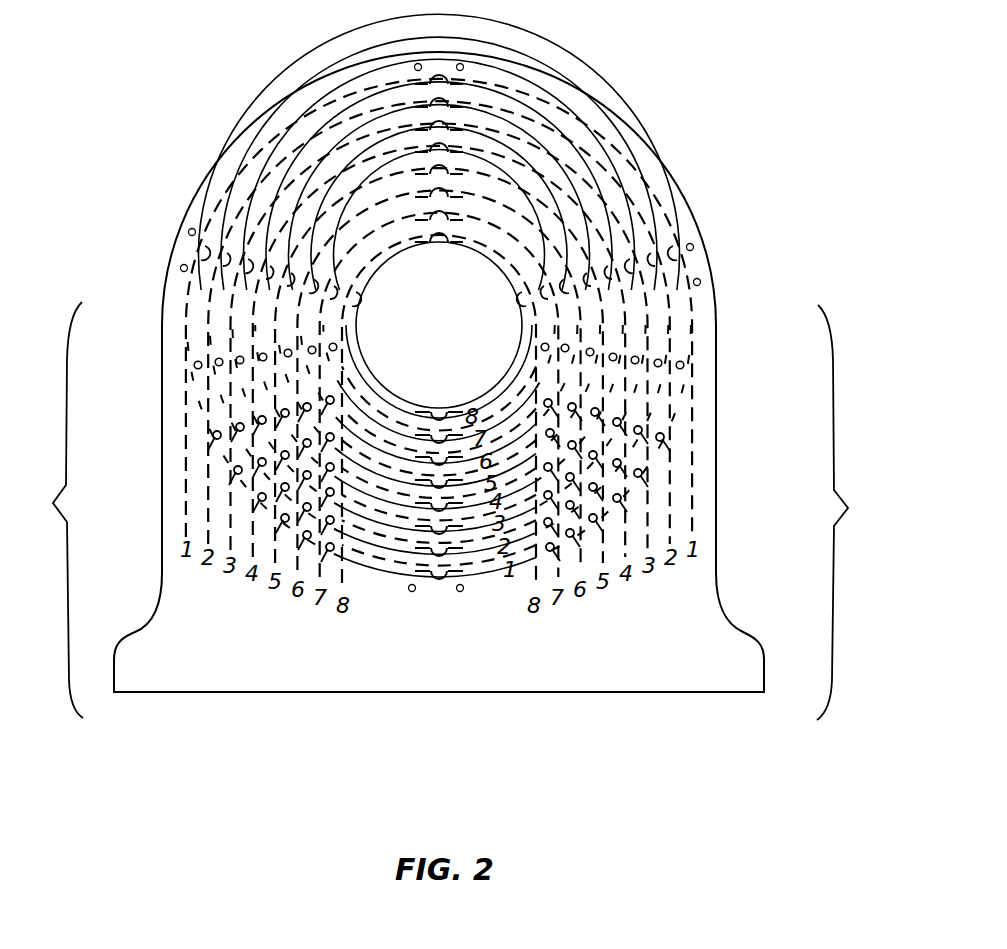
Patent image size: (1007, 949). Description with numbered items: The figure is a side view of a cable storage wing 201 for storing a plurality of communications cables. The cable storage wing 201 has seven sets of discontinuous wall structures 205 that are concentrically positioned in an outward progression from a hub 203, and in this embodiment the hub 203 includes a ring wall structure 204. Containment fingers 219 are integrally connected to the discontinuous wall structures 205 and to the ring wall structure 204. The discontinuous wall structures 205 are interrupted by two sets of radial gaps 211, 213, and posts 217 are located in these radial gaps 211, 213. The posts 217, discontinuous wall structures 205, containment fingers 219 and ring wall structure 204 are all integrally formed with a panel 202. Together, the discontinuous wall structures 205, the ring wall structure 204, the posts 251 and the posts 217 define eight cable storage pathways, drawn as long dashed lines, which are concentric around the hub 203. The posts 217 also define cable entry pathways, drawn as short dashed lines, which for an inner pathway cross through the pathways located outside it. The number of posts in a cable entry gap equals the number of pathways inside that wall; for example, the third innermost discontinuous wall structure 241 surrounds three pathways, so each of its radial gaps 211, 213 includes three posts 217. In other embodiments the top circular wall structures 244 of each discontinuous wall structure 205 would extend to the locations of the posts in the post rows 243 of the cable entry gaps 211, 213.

The cable storage wing 201 is at (672, 148).
The panel 202 is at (435, 694).
The hub 203 is at (471, 346).
The ring wall structure 204 is at (393, 256).
The discontinuous wall structures 205 is at (285, 133).
The radial gap 211 is at (45, 510).
The radial gap 213 is at (859, 512).
The posts 217 is at (662, 435).
The containment fingers 219 is at (693, 262).
The third innermost discontinuous wall structure 241 is at (489, 185).
The post rows 243 is at (196, 362).
The top circular wall structures 244 is at (465, 103).
The posts 251 is at (459, 63).